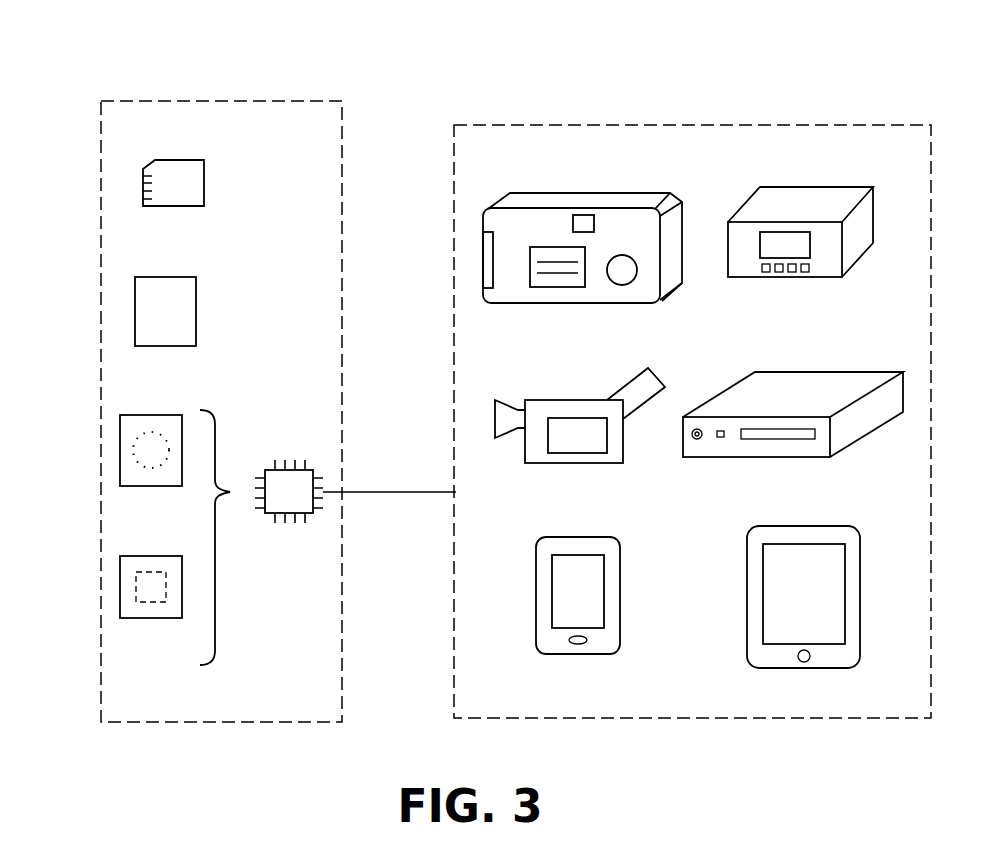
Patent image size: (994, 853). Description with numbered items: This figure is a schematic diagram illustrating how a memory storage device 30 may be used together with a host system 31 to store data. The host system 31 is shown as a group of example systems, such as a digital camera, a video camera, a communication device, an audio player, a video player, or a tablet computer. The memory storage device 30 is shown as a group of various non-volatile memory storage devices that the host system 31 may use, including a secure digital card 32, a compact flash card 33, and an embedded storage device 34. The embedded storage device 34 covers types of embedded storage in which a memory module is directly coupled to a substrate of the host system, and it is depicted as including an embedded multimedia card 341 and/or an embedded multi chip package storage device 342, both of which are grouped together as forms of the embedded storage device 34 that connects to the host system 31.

The memory storage device 30 is at (211, 100).
The host system 31 is at (616, 124).
The secure digital (SD) card 32 is at (143, 190).
The compact flash (CF) card 33 is at (135, 313).
The embedded storage device 34 is at (288, 461).
The embedded multimedia card (eMMC) 341 is at (120, 452).
The embedded multi chip package (eMCP) storage device 342 is at (120, 590).